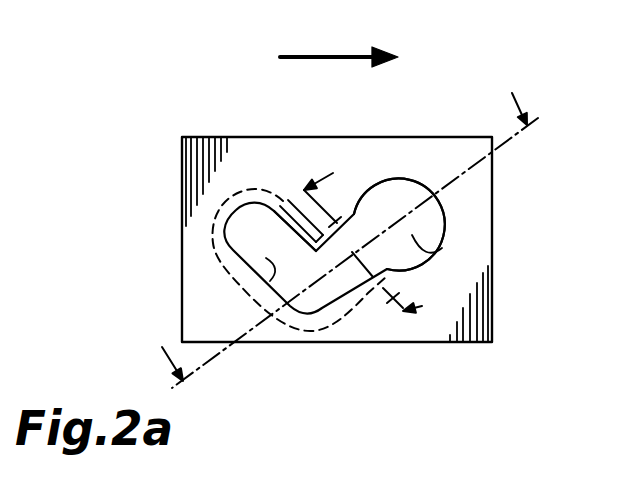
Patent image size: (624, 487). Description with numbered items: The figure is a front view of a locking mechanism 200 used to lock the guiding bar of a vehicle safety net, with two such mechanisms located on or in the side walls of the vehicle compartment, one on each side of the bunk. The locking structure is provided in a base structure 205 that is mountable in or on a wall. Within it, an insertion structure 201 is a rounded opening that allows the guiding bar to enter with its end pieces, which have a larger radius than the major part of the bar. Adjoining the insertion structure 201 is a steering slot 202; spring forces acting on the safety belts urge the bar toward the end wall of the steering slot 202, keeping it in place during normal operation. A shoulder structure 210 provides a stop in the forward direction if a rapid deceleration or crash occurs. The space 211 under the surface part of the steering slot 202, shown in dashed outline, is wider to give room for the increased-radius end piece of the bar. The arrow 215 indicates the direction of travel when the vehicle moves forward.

The locking mechanism 200 is at (129, 121).
The insertion structure 201 is at (437, 252).
The steering slot 202 is at (262, 280).
The base structure 205 is at (413, 157).
The shoulder structure 210 is at (277, 203).
The space under the surface part of the steering slot 211 is at (212, 245).
The arrow indicating direction of travel 215 is at (345, 50).